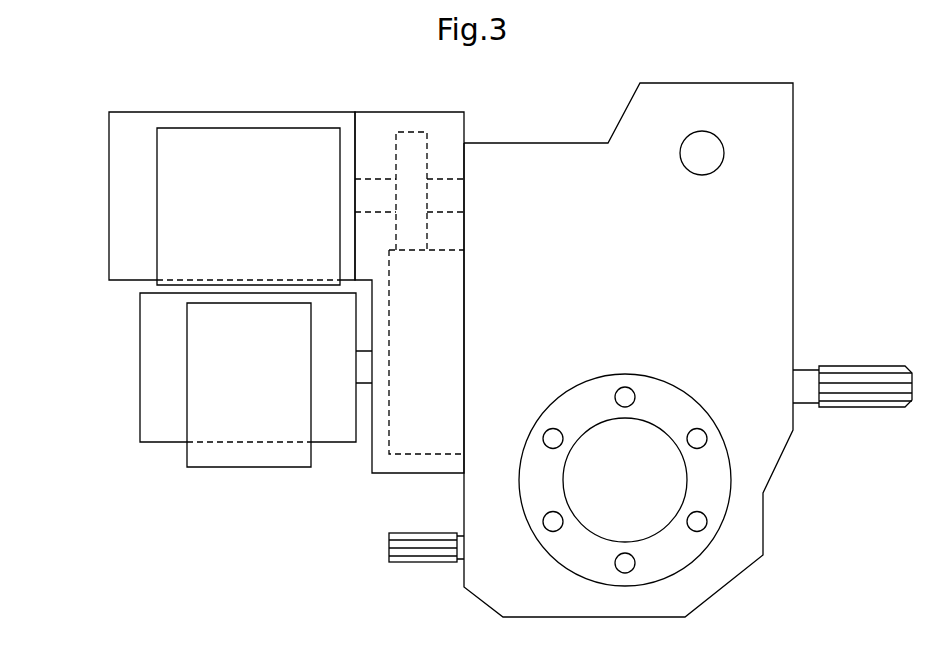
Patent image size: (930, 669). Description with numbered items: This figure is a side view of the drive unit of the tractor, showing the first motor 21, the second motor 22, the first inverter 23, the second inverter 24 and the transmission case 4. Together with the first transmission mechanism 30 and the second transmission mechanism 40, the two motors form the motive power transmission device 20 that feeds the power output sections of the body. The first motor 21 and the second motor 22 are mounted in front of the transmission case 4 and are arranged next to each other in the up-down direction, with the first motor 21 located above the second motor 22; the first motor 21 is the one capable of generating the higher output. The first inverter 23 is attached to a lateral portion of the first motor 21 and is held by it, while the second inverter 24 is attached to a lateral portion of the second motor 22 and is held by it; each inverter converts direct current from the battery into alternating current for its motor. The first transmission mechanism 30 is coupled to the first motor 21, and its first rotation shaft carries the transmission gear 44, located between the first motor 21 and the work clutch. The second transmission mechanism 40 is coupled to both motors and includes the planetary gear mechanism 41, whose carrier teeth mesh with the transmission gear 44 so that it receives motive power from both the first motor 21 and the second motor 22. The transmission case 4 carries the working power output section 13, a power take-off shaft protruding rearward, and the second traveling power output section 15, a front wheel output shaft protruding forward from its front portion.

The transmission case 4 is at (791, 250).
The working power output section 13 is at (883, 405).
The second traveling power output section 15 is at (425, 558).
The motive power transmission device 20 is at (153, 95).
The first motor 21 is at (113, 198).
The second motor 22 is at (145, 387).
The first inverter 23 is at (247, 145).
The second inverter 24 is at (220, 462).
The first transmission mechanism 30 is at (445, 141).
The second transmission mechanism 40 is at (322, 505).
The planetary gear mechanism 41 is at (405, 455).
The transmission gear 44 is at (418, 128).